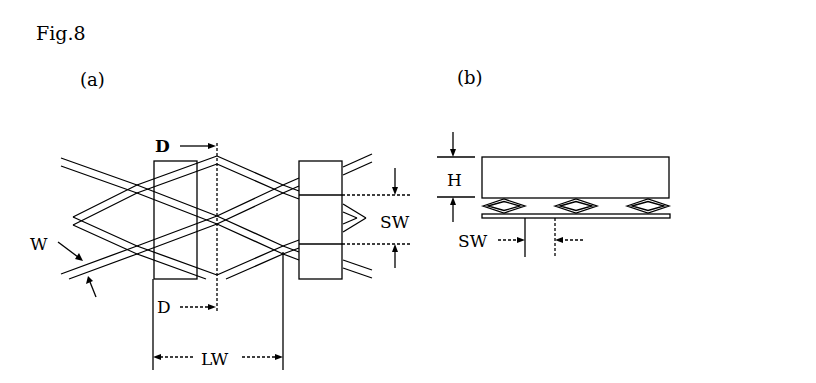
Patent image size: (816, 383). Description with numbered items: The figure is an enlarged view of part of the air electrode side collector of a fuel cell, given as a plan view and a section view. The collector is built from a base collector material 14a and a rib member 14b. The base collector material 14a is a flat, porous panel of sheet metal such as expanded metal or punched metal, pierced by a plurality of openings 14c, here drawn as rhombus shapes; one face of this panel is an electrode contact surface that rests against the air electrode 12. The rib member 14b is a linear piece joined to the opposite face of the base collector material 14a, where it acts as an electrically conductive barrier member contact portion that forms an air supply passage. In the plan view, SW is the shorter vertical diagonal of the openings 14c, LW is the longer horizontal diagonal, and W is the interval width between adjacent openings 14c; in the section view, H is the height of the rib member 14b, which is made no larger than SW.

The air electrode 12 is at (626, 219).
The base collector material 14a is at (78, 173).
The rib member 14b is at (322, 161).
The openings 14c is at (140, 212).